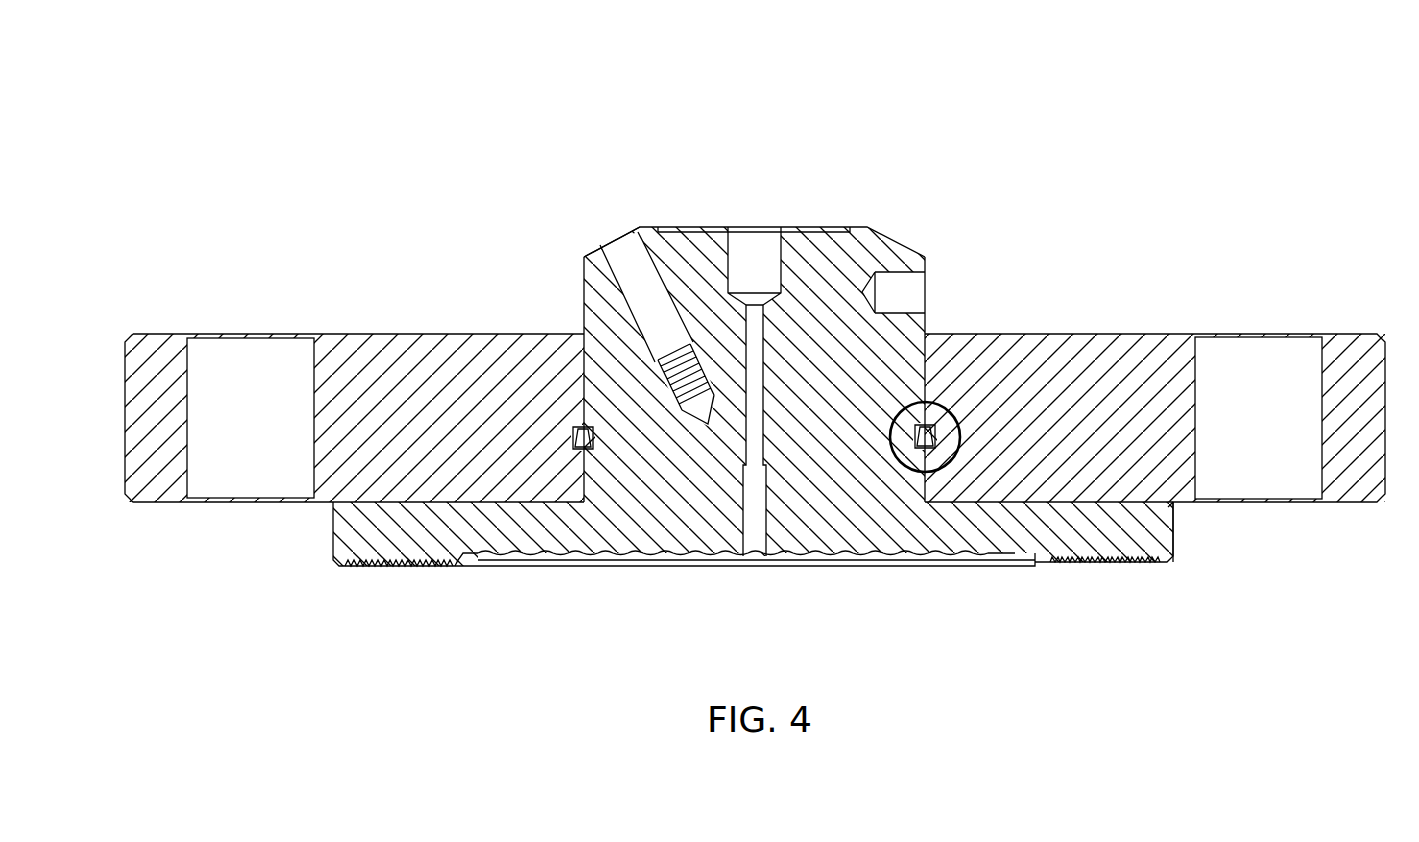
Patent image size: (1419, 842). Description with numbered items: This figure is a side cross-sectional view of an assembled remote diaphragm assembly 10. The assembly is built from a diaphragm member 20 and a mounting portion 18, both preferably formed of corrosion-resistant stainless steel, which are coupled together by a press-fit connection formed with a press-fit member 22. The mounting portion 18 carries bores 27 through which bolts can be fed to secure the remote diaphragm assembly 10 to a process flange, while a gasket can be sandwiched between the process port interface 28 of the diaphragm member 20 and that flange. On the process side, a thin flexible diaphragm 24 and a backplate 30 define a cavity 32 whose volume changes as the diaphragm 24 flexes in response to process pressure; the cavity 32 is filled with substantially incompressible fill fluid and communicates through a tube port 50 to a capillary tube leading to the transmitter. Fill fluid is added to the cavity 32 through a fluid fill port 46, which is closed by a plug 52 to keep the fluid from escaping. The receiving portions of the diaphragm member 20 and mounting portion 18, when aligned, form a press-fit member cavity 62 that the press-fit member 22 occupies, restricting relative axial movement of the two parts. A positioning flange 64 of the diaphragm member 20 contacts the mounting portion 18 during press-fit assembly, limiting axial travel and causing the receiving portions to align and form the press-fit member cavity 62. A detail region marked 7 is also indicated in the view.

The remote diaphragm assembly 10 is at (1172, 152).
The mounting portion 18 is at (1107, 332).
The diaphragm member 20 is at (893, 238).
The press-fit member 22 is at (575, 430).
The diaphragm 24 is at (890, 562).
The bores 27 is at (255, 372).
The process port interface 28 is at (395, 566).
The backplate 30 is at (708, 553).
The cavity 32 is at (583, 557).
The fluid fill port 46 is at (620, 250).
The tube port 50 is at (757, 253).
The plug 52 is at (600, 257).
The press-fit member cavity 62 is at (930, 425).
The positioning flange 64 is at (1172, 530).
The detail circle 7 is at (950, 460).